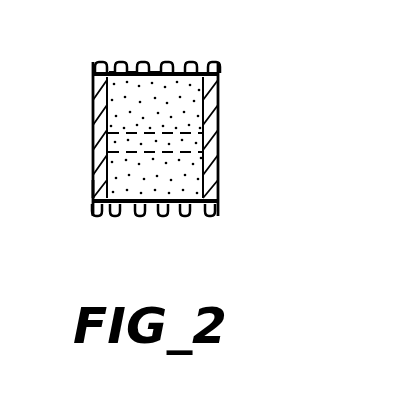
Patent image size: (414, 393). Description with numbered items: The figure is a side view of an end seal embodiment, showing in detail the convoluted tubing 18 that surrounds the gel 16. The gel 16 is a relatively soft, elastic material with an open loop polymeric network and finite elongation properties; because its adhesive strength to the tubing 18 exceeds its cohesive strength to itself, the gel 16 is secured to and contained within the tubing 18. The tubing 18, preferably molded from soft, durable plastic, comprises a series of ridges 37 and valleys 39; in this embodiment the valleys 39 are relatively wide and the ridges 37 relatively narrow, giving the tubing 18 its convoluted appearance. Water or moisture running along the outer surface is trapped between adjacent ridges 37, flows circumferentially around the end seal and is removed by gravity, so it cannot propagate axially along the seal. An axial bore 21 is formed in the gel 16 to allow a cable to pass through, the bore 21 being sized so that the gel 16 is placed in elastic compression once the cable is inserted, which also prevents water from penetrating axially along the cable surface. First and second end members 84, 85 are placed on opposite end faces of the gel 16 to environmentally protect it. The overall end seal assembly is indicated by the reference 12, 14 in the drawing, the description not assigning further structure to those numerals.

The heat sink 12 is at (80, 76).
The heat sink body 14 is at (148, 140).
The ridges 37 is at (212, 64).
The valleys 39 is at (155, 66).
The first end member 84 is at (100, 151).
The second end member 85 is at (219, 166).
The axial bore 21 is at (92, 198).
The convoluted tubing 18 is at (186, 216).
The gel 16 is at (215, 201).